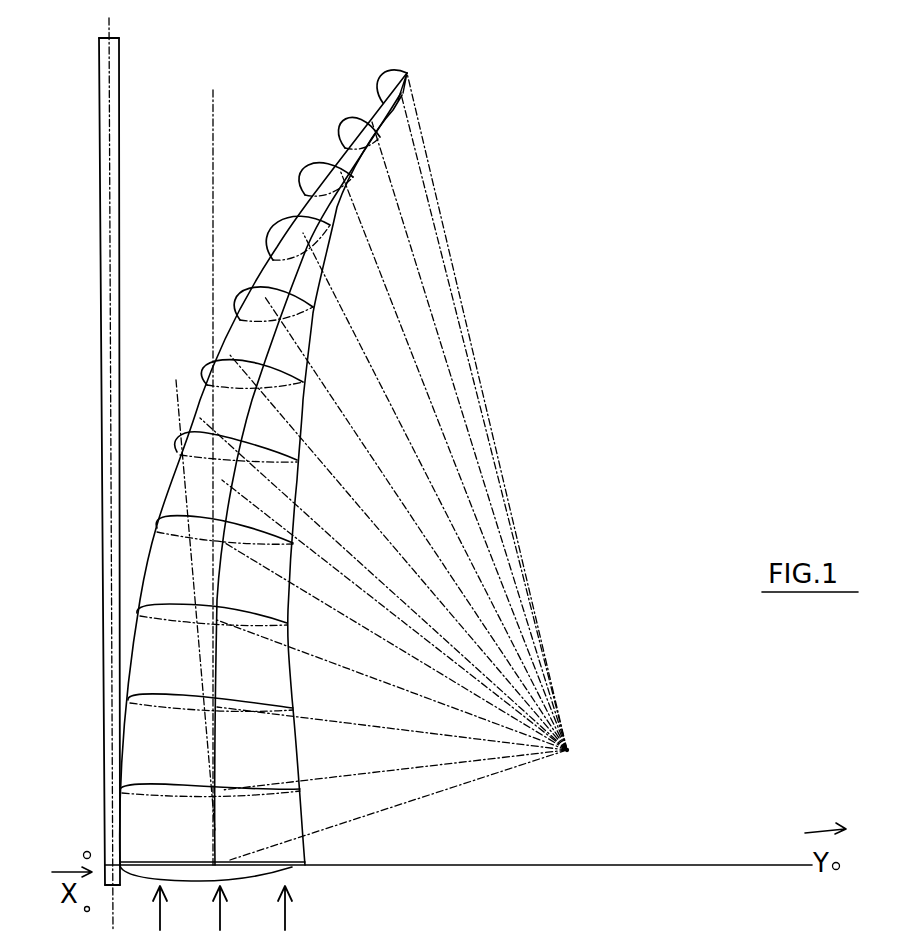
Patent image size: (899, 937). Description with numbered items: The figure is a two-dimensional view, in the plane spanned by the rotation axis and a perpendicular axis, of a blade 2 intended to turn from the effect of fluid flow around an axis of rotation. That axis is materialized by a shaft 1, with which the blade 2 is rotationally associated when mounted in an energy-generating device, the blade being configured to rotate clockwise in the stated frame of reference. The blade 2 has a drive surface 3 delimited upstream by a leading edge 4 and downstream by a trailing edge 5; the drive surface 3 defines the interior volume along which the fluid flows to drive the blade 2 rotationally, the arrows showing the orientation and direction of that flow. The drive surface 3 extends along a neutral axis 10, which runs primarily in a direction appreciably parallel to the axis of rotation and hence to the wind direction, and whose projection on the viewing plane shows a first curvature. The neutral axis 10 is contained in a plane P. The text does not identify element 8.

The shaft 1 is at (100, 519).
The blade 2 is at (379, 466).
The drive surface 3 is at (254, 645).
The leading edge 4 is at (293, 868).
The trailing edge 5 is at (390, 68).
The head of the sail 8 is at (404, 90).
The neutral axis 10 is at (270, 347).
The plane P is at (530, 718).